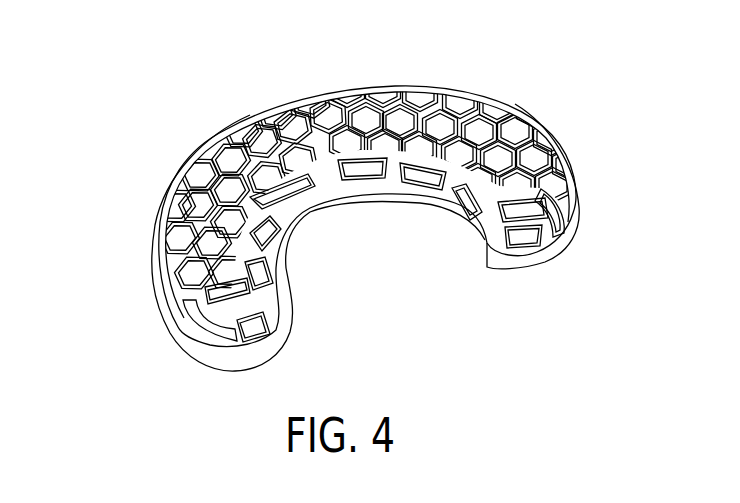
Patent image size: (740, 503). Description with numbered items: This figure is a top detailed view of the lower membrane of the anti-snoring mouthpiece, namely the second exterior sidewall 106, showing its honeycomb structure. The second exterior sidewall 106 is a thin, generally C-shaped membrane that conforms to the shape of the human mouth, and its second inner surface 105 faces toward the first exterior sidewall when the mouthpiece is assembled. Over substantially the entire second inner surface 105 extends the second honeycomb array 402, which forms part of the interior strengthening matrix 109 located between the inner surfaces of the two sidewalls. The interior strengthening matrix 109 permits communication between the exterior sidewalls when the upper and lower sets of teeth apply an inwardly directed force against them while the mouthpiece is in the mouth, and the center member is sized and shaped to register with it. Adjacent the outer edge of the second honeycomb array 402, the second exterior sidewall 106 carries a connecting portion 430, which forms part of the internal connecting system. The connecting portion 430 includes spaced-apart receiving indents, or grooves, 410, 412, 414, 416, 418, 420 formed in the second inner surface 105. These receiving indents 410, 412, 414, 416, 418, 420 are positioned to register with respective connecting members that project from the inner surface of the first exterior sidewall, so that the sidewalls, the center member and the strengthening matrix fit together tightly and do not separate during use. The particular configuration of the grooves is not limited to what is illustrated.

The second exterior sidewall 106 is at (519, 110).
The second inner surface 105 is at (427, 98).
The interior strengthening matrix 109 is at (318, 102).
The second honeycomb array 402 is at (181, 201).
The receiving indent 410 is at (547, 195).
The receiving indent 412 is at (475, 200).
The receiving indent 414 is at (363, 170).
The receiving indent 416 is at (268, 235).
The receiving indent 418 is at (180, 318).
The receiving indent 420 is at (273, 332).
The connecting portion 430 is at (503, 247).